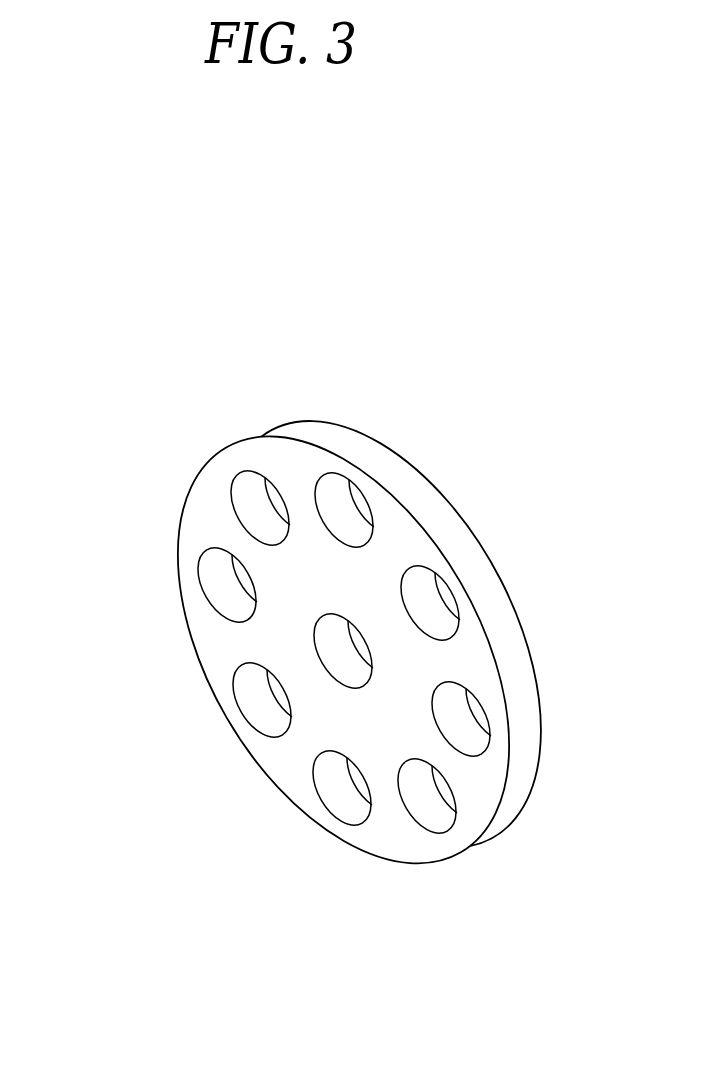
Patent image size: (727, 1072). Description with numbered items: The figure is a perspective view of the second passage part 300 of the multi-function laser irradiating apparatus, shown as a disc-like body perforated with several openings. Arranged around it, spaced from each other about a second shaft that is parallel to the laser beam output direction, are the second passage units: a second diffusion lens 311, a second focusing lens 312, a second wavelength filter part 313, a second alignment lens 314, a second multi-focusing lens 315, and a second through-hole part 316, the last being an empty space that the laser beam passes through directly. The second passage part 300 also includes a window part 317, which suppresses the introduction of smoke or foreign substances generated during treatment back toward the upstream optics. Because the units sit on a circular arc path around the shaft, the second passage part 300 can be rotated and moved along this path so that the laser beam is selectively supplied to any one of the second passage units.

The second passage part 300 is at (313, 302).
The second diffusion lens 311 is at (337, 797).
The second focusing lens 312 is at (250, 707).
The second wavelength filter part 313 is at (216, 592).
The second alignment lens 314 is at (257, 503).
The second multi-focusing lens 315 is at (352, 516).
The second through-hole part 316 is at (435, 618).
The window part 317 is at (468, 733).